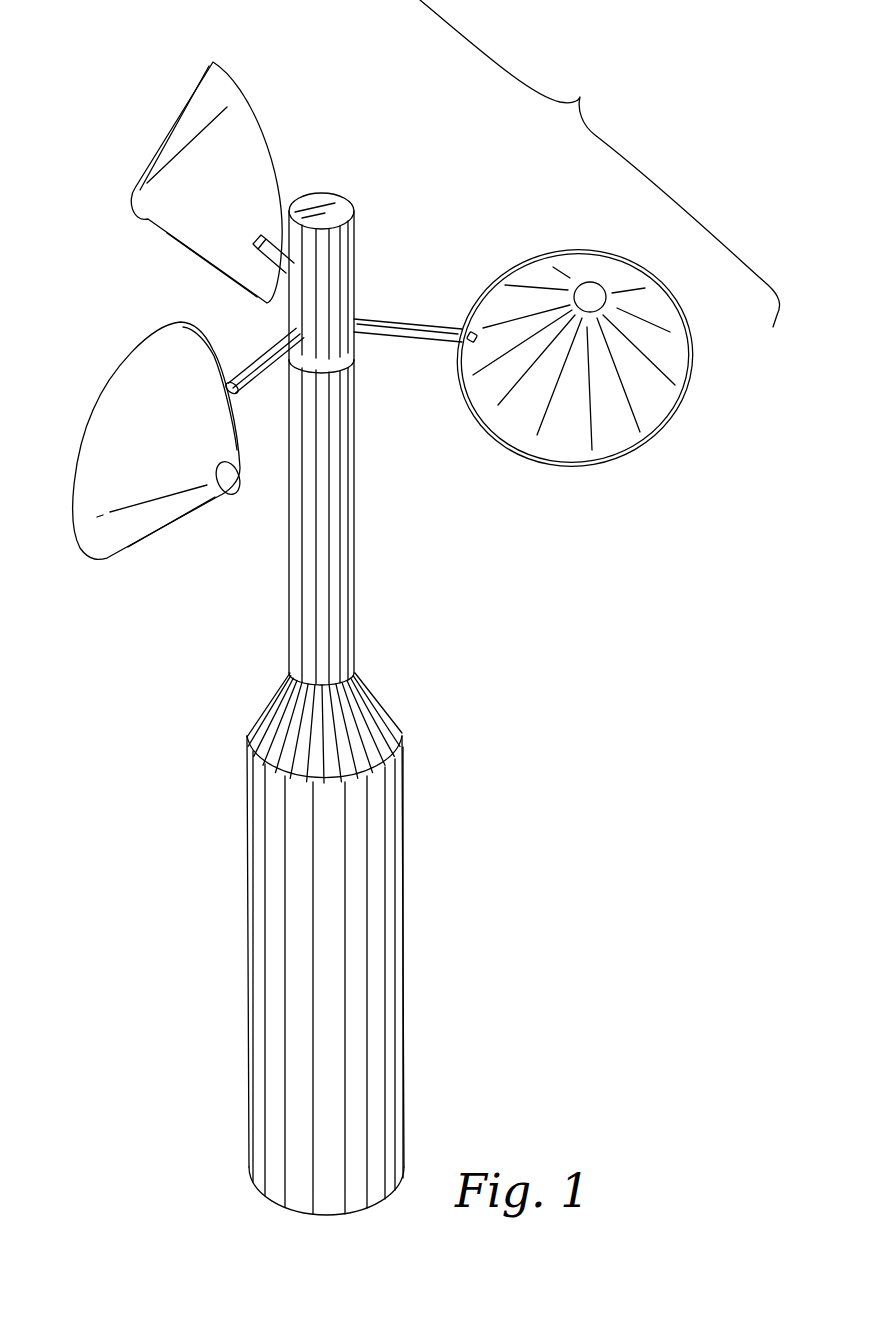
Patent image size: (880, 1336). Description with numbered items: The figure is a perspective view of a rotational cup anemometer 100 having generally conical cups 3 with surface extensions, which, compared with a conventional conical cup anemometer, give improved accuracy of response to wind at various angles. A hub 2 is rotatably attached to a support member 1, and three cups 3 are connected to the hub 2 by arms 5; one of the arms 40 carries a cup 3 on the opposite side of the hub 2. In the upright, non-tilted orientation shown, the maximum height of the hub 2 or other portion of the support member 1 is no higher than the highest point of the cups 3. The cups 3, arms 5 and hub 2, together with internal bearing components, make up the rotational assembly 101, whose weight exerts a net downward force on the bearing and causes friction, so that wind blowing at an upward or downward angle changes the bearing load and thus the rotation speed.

The support member 1 is at (348, 549).
The hub 2 is at (352, 262).
The cups 3 is at (175, 138).
The arms 5 is at (400, 318).
The arm 40 is at (228, 378).
The rotational cup anemometer 100 is at (540, 810).
The rotational assembly 101 is at (600, 163).